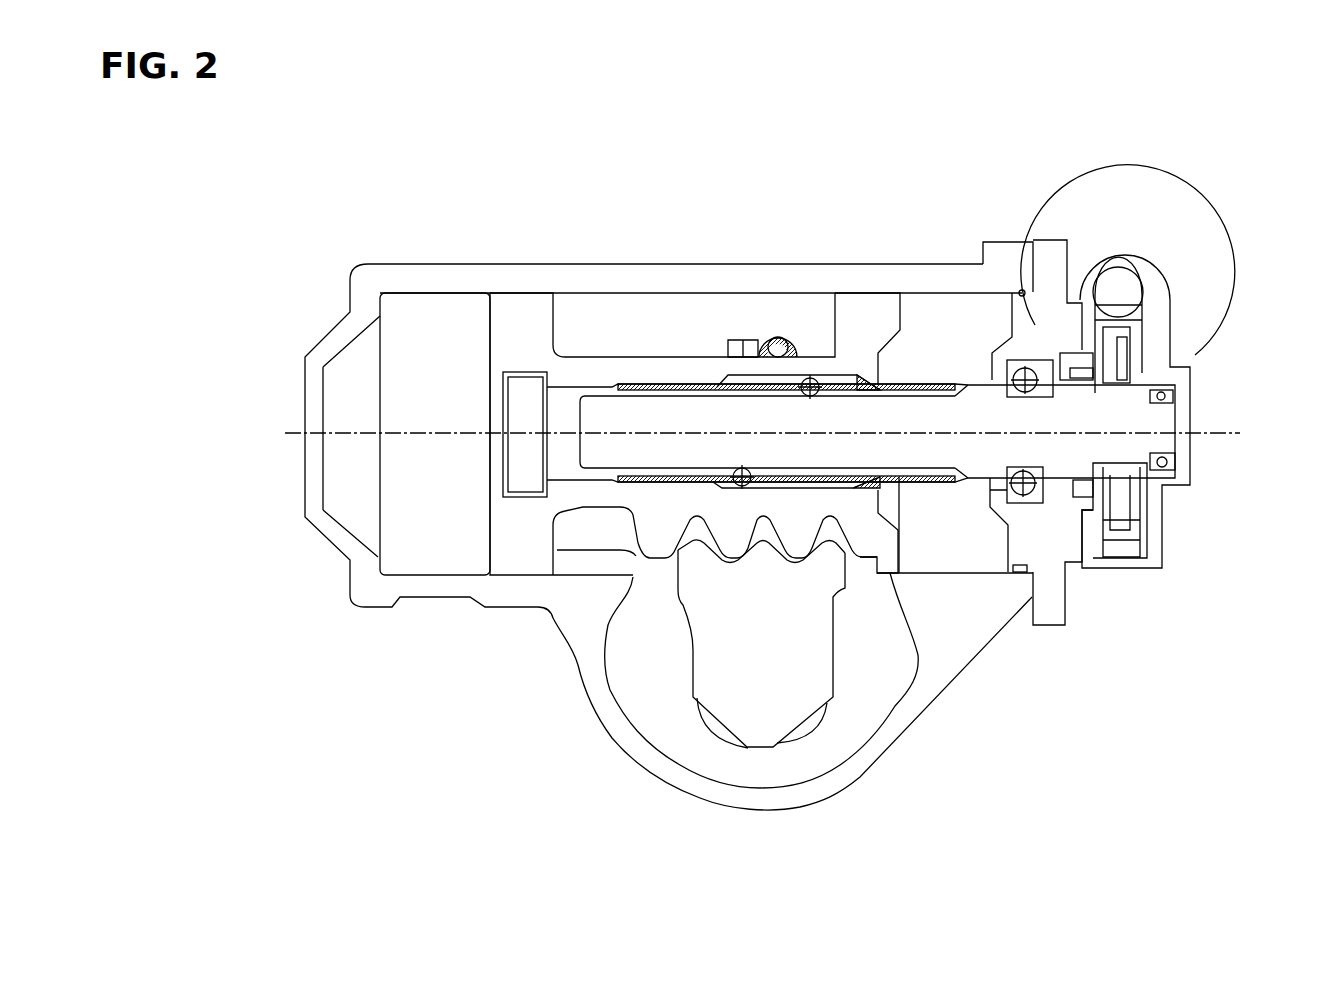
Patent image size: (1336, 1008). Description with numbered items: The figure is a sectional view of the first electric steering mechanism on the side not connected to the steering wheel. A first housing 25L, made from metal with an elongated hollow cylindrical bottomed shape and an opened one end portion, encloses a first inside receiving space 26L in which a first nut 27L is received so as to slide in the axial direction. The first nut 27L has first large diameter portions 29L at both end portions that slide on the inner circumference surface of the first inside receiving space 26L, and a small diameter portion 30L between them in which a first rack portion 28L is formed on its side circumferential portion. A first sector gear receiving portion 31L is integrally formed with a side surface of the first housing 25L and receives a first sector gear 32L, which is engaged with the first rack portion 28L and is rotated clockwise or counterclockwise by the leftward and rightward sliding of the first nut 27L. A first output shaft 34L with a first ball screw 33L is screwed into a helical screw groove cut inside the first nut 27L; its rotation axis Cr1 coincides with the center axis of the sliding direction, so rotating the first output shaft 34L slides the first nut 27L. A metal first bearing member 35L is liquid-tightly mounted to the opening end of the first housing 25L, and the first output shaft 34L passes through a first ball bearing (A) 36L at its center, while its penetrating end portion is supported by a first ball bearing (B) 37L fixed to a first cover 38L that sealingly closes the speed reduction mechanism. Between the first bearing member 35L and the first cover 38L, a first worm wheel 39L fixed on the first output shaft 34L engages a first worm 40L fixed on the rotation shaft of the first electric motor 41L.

The first housing 25L is at (748, 264).
The first inside receiving space 26L is at (435, 303).
The first nut 27L is at (590, 355).
The first rack portion 28L is at (647, 528).
The first large diameter portions 29L is at (523, 302).
The small diameter portion 30L is at (663, 362).
The first sector gear receiving portion 31L is at (768, 798).
The first sector gear 32L is at (792, 705).
The first ball screw 33L is at (813, 377).
The first output shaft 34L is at (925, 455).
The first bearing member 35L is at (1063, 608).
The first ball bearing (A) 36L is at (1013, 370).
The first ball bearing (B) 37L is at (1167, 462).
The first cover 38L is at (1162, 527).
The first worm wheel 39L is at (1110, 377).
The first worm 40L is at (1127, 283).
The first electric motor 41L is at (1147, 185).
The rotation axis Cr1 is at (437, 437).